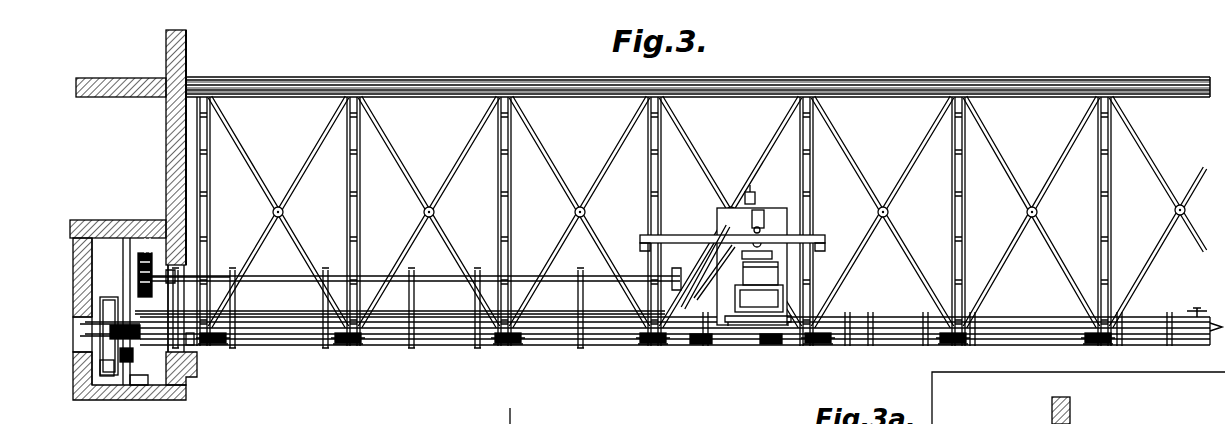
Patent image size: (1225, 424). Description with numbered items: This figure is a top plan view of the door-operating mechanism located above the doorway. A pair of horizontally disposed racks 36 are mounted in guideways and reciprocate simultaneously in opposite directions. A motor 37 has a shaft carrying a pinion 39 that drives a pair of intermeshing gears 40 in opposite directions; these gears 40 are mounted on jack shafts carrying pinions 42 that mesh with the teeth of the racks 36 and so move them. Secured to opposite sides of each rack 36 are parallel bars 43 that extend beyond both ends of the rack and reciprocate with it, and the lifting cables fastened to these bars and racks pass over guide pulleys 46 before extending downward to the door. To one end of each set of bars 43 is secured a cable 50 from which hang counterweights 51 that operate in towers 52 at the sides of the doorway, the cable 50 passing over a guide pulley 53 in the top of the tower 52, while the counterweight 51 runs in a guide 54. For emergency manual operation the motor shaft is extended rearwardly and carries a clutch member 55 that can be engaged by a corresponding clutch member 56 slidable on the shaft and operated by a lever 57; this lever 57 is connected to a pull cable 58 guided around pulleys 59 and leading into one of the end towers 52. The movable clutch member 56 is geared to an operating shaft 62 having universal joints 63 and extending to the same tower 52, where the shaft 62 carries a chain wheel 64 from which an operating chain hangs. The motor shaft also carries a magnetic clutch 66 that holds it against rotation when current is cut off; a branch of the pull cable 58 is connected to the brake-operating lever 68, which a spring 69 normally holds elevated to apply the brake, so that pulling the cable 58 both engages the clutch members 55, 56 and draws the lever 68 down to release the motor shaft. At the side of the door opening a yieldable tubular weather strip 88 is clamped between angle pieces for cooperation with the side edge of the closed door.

The rack 36 is at (815, 300).
The motor 37 is at (778, 274).
The pinion 39 is at (790, 316).
The intermeshing gear 40 is at (749, 298).
The pinion 42 is at (702, 344).
The parallel bar 43 is at (440, 340).
The guide pulley 46 is at (213, 343).
The cable 50 is at (190, 300).
The counterweight 51 is at (150, 385).
The tower 52 is at (186, 378).
The guide pulley 53 is at (109, 297).
The guide 54 is at (106, 376).
The clutch member 55 is at (763, 243).
The clutch member 56 is at (762, 230).
The lever 57 is at (765, 214).
The pull cable 58 is at (262, 311).
The pulley 59 is at (134, 354).
The operating shaft 62 is at (272, 276).
The universal joint 63 is at (690, 272).
The chain wheel 64 is at (145, 253).
The magnetic clutch 66 is at (772, 255).
The brake-operating lever 68 is at (756, 240).
The spring 69 is at (756, 198).
The weather strip 88 is at (196, 345).